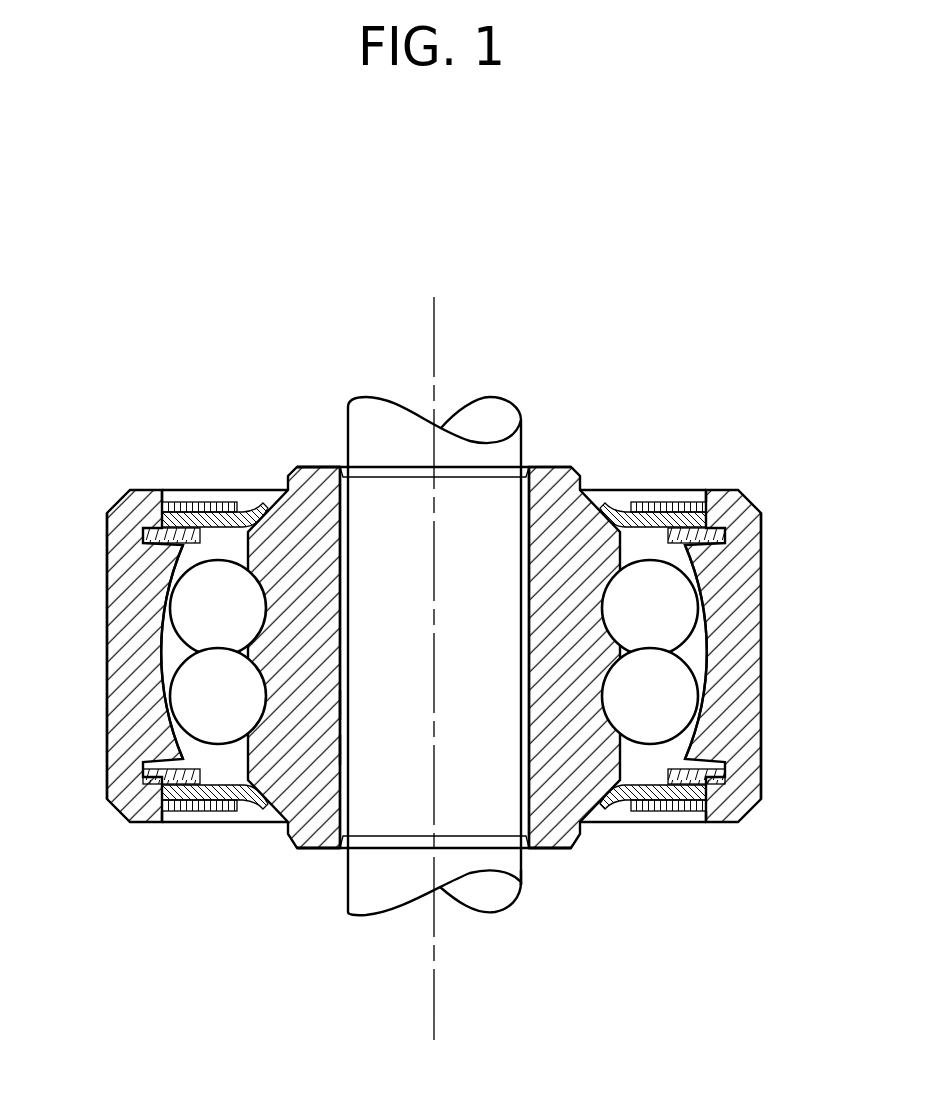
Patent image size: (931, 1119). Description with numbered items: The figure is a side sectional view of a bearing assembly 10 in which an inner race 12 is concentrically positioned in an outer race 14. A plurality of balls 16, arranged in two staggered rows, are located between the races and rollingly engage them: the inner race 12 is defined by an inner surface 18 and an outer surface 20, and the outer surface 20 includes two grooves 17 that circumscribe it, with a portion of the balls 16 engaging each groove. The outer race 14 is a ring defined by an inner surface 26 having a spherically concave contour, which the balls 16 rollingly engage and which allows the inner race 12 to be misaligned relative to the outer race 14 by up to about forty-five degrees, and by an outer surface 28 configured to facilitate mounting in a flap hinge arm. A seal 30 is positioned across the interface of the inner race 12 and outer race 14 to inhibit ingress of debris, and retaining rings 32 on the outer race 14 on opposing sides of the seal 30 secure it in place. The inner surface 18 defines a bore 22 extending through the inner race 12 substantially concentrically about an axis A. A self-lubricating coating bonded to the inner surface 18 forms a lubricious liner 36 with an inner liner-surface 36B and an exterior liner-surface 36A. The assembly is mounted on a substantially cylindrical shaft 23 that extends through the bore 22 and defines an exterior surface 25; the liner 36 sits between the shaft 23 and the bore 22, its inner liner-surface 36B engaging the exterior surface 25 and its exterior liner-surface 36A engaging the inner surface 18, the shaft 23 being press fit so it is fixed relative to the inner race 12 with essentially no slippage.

The bearing assembly 10 is at (505, 283).
The inner race 12 is at (573, 466).
The outer race 14 is at (740, 488).
The balls 16 is at (683, 690).
The grooves 17 is at (258, 700).
The inner surface 18 is at (348, 848).
The outer surface 20 is at (627, 550).
The bore 22 is at (336, 461).
The shaft 23 is at (472, 400).
The exterior surface 25 is at (521, 880).
The inner surface 26 is at (212, 515).
The outer surface 28 is at (762, 580).
The seal 30 is at (165, 518).
The retaining rings 32 is at (693, 500).
The lubricious liner 36 is at (345, 667).
The exterior liner-surface 36A is at (352, 705).
The inner liner-surface 36B is at (352, 746).
The axis A is at (437, 815).